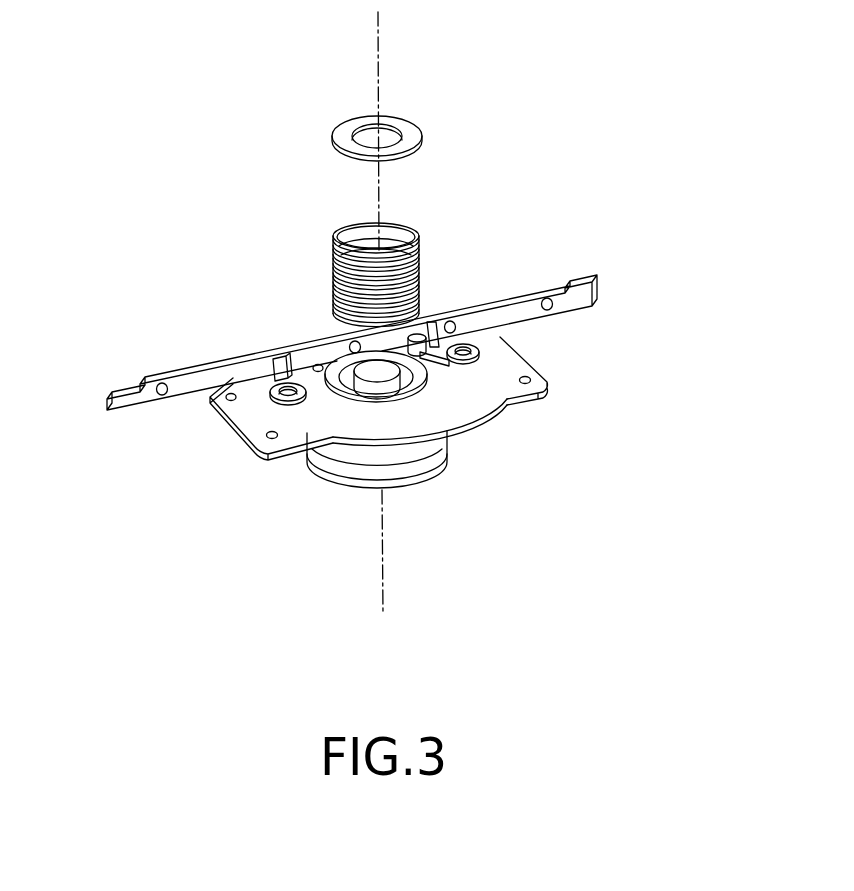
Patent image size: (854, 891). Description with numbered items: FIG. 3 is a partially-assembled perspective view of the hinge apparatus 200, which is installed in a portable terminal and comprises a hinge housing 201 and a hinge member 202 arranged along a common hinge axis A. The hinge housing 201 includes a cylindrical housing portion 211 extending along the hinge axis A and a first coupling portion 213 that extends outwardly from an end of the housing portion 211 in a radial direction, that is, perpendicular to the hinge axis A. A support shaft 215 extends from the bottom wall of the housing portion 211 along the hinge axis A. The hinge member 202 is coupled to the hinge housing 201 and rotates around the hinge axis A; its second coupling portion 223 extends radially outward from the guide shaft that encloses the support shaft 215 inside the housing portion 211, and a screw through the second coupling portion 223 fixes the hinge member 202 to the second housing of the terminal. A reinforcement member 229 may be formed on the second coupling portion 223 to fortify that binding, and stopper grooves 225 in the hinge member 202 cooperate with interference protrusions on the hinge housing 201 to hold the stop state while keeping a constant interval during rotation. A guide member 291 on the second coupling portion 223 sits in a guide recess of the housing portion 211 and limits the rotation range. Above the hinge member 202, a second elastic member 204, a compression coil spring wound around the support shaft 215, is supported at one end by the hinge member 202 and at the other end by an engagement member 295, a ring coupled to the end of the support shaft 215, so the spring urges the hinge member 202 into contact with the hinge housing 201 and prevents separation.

The hinge apparatus 200 is at (148, 142).
The hinge axis A is at (378, 62).
The engagement member 295 is at (412, 134).
The second elastic member 204 is at (318, 264).
The hinge member 202 is at (346, 338).
The reinforcement member 229 is at (161, 378).
The guide member 291 is at (437, 340).
The stopper grooves 225 is at (508, 333).
The hinge housing 201 is at (363, 437).
The first coupling portion 213 is at (256, 432).
The support shaft 215 is at (388, 372).
The second coupling portion 223 is at (407, 420).
The housing portion 211 is at (353, 460).